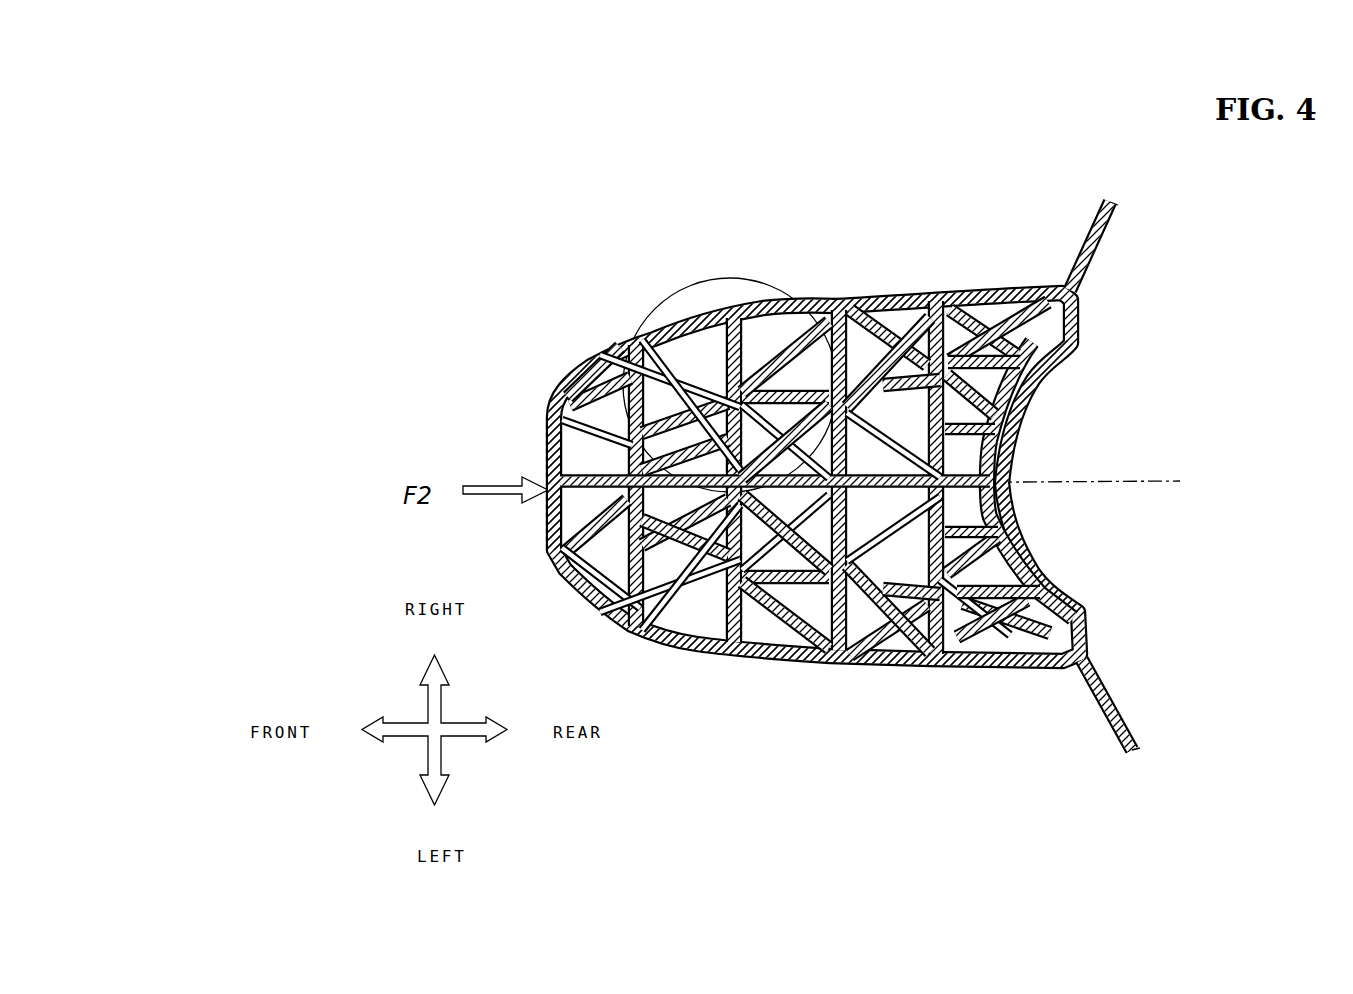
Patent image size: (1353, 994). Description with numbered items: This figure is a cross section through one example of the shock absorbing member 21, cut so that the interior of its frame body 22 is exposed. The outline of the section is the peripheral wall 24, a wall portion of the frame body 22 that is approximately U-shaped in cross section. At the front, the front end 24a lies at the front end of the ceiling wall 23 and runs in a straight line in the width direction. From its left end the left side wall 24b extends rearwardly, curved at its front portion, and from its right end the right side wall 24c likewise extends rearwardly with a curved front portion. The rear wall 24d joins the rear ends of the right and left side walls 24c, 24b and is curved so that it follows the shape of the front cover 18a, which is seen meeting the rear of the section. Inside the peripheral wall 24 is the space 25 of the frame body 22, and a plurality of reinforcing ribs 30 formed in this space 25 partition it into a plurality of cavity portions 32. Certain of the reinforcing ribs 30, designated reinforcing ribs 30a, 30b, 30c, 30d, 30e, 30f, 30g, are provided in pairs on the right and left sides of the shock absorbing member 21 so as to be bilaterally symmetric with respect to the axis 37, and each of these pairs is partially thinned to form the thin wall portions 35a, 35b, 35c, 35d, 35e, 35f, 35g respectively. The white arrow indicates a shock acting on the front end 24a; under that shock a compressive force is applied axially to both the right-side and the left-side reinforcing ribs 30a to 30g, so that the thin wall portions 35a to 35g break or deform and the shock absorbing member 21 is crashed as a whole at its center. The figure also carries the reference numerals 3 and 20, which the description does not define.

The vehicle body frame 3 is at (640, 355).
The front cover 18a is at (1080, 235).
The frame member 20 is at (773, 182).
The shock absorbing member 21 is at (990, 283).
The frame body 22 is at (1030, 285).
The ceiling wall 23 is at (1045, 325).
The peripheral wall 24 is at (771, 433).
The front end 24a is at (552, 512).
The left side wall 24b is at (957, 667).
The right side wall 24c is at (938, 290).
The rear wall 24d is at (1023, 400).
The space 25 is at (1010, 455).
The reinforcing ribs 30 is at (585, 390).
The reinforcing rib 30a is at (585, 433).
The reinforcing rib 30b is at (763, 410).
The reinforcing rib 30c is at (743, 383).
The reinforcing rib 30d is at (813, 343).
The reinforcing rib 30e is at (743, 383).
The reinforcing rib 30f is at (905, 320).
The reinforcing rib 30g is at (890, 310).
The cavity portions 32 is at (965, 510).
The thin wall portion 35a is at (600, 420).
The thin wall portion 35b is at (752, 315).
The thin wall portion 35c is at (690, 375).
The thin wall portion 35d is at (777, 327).
The thin wall portion 35e is at (703, 353).
The thin wall portion 35f is at (885, 335).
The thin wall portion 35g is at (858, 320).
The axis 37 is at (1155, 480).